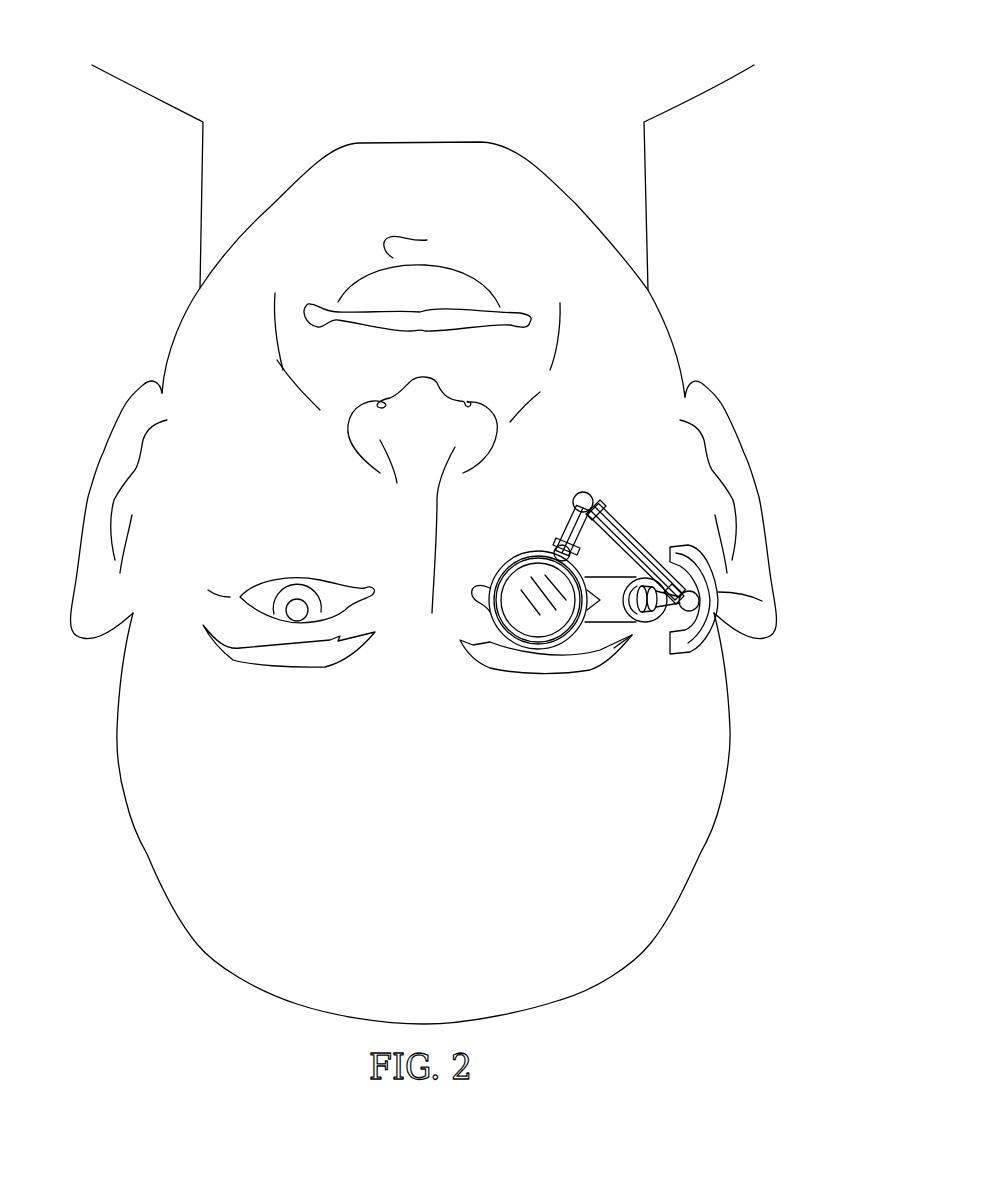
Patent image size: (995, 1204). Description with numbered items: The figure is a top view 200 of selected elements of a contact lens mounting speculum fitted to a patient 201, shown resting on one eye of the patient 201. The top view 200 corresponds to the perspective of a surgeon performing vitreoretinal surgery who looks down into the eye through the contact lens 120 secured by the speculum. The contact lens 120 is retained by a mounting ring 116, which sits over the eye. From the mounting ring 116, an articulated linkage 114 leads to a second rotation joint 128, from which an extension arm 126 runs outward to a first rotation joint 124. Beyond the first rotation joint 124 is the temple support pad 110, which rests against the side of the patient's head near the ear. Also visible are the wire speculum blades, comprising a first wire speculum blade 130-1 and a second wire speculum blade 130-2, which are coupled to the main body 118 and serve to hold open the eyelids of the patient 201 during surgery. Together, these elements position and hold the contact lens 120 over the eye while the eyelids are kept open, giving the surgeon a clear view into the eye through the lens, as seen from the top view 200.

The top view 200 is at (308, 88).
The patient 201 is at (422, 143).
The temple support pad 110 is at (683, 655).
The articulated linkage 114 is at (567, 540).
The mounting ring 116 is at (517, 556).
The main body 118 is at (647, 622).
The contact lens 120 is at (523, 628).
The first rotation joint 124 is at (699, 601).
The extension arm 126 is at (648, 553).
The second rotation joint 128 is at (583, 492).
The first wire speculum blade 130-1 is at (608, 623).
The second wire speculum blade 130-2 is at (608, 576).